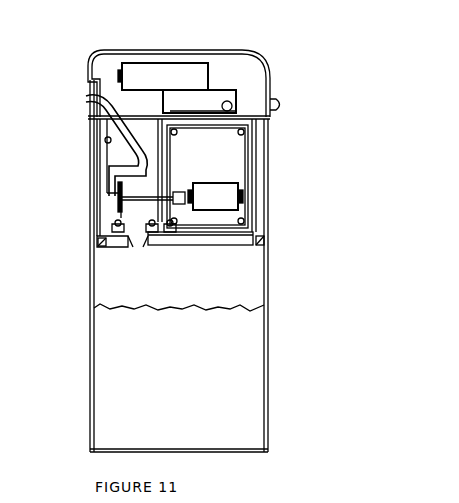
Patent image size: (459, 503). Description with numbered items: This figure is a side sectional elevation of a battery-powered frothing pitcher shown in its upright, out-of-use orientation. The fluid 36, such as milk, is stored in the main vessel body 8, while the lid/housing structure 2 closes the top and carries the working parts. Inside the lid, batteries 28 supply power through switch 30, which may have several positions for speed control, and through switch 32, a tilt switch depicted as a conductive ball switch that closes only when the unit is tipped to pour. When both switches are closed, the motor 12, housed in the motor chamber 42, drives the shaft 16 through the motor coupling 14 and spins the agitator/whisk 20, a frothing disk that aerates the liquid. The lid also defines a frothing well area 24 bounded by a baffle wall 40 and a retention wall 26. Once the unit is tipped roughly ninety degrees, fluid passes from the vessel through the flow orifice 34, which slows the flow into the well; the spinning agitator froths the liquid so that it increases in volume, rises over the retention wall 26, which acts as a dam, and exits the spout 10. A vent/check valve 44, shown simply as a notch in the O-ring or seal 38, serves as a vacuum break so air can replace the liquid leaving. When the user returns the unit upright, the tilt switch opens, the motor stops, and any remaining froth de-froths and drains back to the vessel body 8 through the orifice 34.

The lid/housing structure 2 is at (102, 54).
The vessel body 8 is at (90, 360).
The spout 10 is at (104, 112).
The motor 12 is at (220, 202).
The motor coupling 14 is at (186, 206).
The shaft 16 is at (178, 205).
The agitator/whisk 20 is at (123, 207).
The frothing well area 24 is at (140, 212).
The retention wall 26 is at (120, 165).
The batteries 28 is at (178, 72).
The switch 1 30 is at (278, 104).
The switch 2 32 is at (236, 96).
The flow orifice 34 is at (135, 236).
The fluid 36 is at (237, 314).
The O-ring or seal 38 is at (99, 242).
The baffle wall 40 is at (232, 242).
The motor chamber 42 is at (203, 173).
The vent/check valve 44 is at (267, 240).